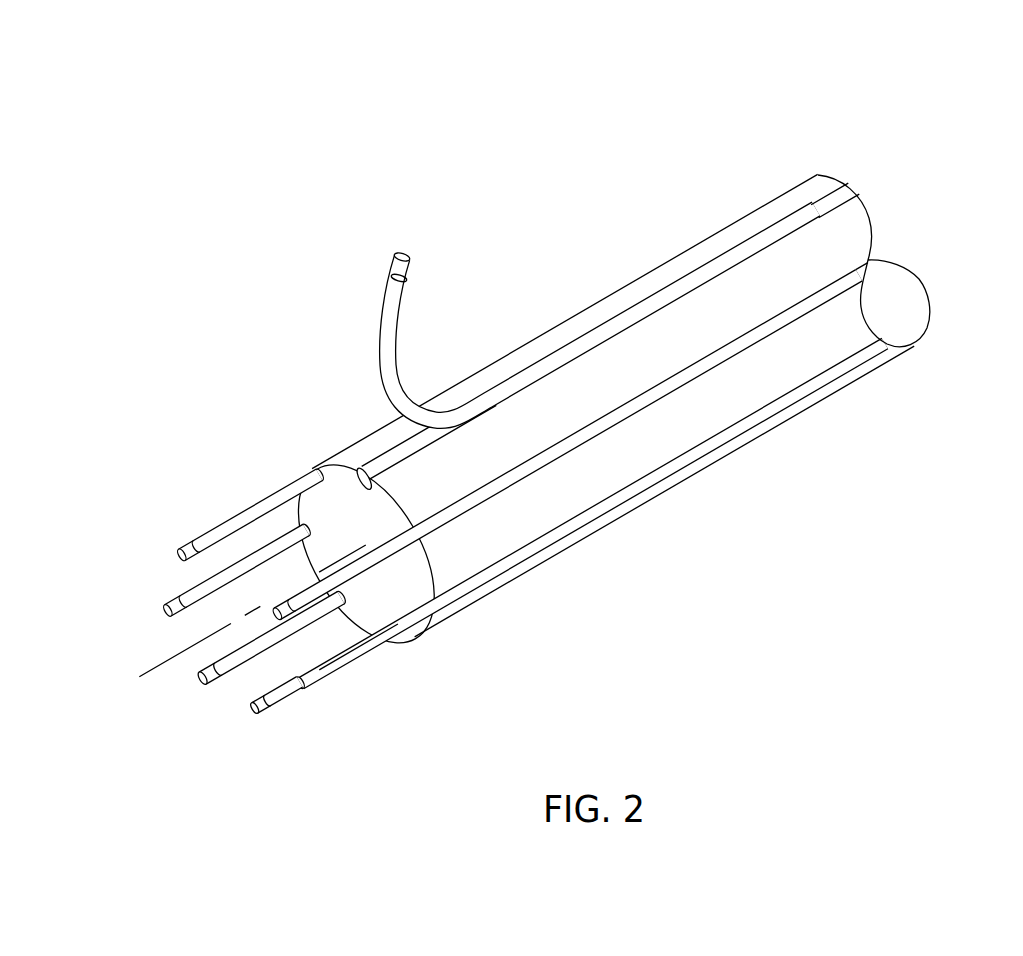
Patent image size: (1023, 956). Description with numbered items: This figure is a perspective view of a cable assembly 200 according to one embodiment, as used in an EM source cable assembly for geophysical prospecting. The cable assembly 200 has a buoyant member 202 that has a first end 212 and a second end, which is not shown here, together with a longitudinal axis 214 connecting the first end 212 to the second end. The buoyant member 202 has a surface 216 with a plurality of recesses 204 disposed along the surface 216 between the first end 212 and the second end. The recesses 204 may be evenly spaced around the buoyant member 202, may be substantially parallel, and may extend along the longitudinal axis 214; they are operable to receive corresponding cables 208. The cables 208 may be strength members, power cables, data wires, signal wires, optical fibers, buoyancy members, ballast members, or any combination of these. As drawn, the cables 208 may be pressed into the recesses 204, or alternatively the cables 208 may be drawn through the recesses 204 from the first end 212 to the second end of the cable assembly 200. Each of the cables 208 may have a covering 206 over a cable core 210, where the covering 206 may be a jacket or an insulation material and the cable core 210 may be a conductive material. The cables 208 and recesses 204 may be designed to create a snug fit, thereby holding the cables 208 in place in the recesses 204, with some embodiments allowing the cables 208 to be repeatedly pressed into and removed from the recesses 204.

The cable assembly 200 is at (520, 391).
The buoyant member 202 is at (853, 241).
The recesses 204 is at (366, 470).
The covering 206 is at (571, 297).
The cables 208 is at (388, 337).
The cable core 210 is at (401, 253).
The first end 212 is at (400, 582).
The longitudinal axis 214 is at (165, 662).
The surface 216 is at (737, 452).